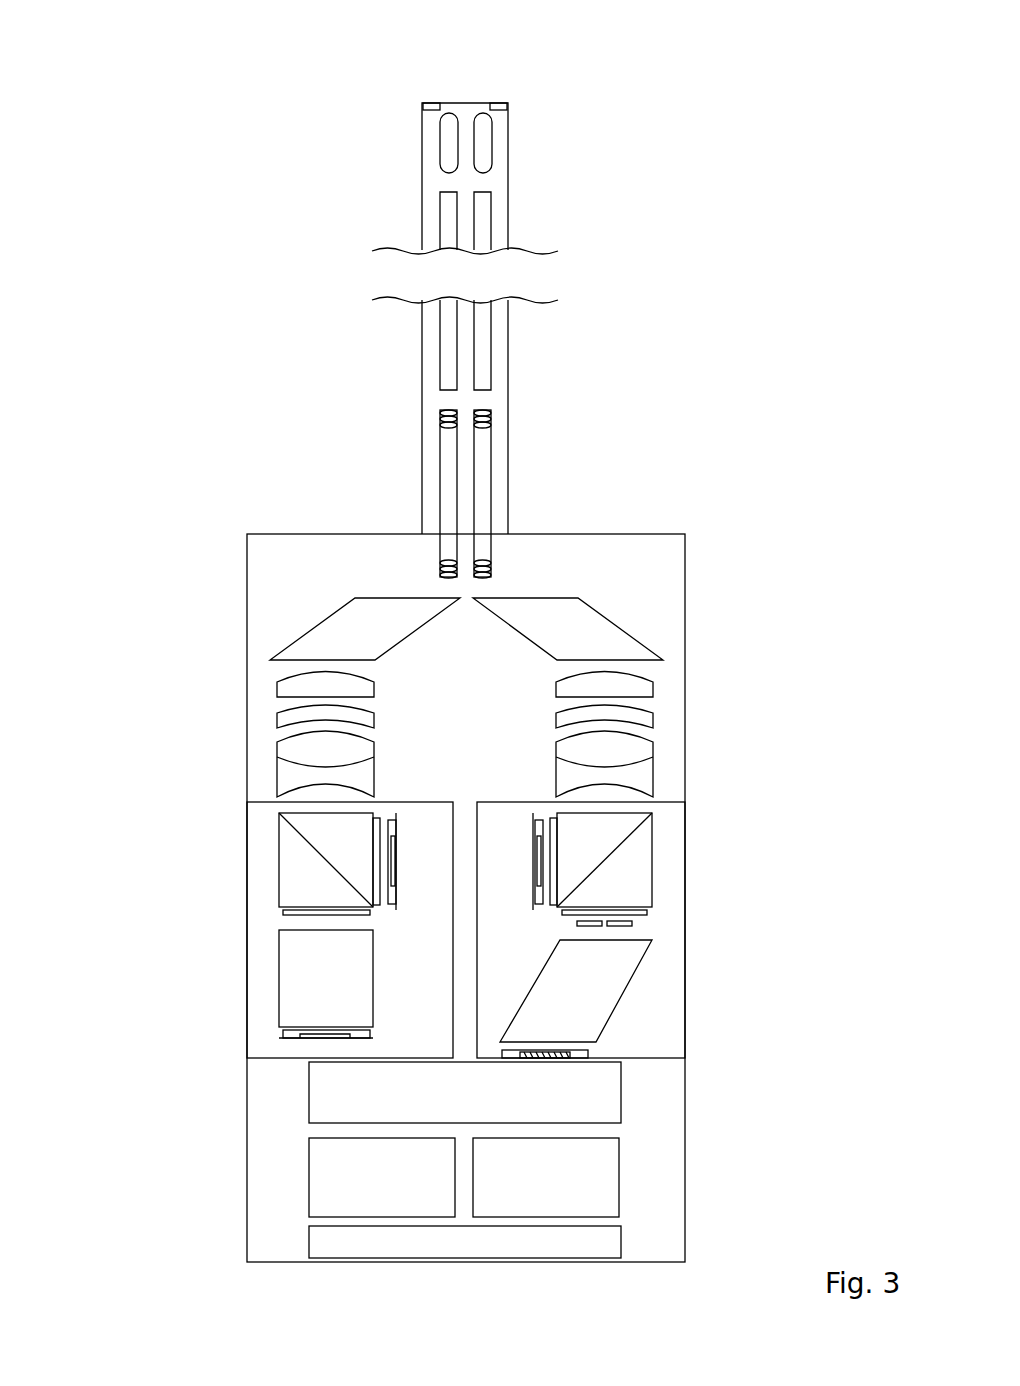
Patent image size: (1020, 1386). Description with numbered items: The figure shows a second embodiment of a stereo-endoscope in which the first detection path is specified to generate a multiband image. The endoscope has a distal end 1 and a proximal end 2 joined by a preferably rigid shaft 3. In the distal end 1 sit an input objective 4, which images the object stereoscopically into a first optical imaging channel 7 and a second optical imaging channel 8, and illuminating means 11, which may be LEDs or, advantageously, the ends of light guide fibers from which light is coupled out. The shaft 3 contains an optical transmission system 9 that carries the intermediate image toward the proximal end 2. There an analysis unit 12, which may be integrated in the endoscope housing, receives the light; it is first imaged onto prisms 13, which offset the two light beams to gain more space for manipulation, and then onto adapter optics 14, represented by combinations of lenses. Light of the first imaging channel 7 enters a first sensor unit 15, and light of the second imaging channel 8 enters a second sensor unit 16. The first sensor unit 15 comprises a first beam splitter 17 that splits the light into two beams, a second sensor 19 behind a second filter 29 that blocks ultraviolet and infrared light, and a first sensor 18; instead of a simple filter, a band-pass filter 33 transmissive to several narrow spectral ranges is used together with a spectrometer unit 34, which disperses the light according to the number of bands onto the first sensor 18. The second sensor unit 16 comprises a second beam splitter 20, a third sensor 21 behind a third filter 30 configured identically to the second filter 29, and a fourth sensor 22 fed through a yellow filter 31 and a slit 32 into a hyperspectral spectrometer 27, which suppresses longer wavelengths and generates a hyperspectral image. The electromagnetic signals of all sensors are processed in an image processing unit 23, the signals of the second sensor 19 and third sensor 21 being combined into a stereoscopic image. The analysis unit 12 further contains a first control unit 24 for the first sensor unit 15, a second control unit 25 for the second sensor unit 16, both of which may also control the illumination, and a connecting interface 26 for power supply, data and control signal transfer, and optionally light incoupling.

The distal end 1 is at (435, 103).
The proximal end 2 is at (494, 530).
The shaft 3 is at (518, 362).
The input objective 4 is at (447, 140).
The first optical imaging channel 7 is at (447, 398).
The second optical imaging channel 8 is at (482, 397).
The optical transmission system 9 is at (481, 211).
The illuminating means 11 is at (437, 103).
The analysis unit 12 is at (312, 532).
The prisms 13 is at (348, 632).
The adapter optics 14 is at (240, 675).
The first sensor unit 15 is at (288, 922).
The second sensor unit 16 is at (675, 978).
The first beam splitter 17 is at (300, 885).
The first sensor 18 is at (277, 1033).
The second sensor 19 is at (386, 827).
The second beam splitter 20 is at (642, 882).
The third sensor 21 is at (543, 827).
The fourth sensor 22 is at (588, 1052).
The image processing unit 23 is at (550, 1103).
The first control unit 24 is at (343, 1167).
The second control unit 25 is at (578, 1178).
The connecting interface 26 is at (398, 1241).
The hyperspectral spectrometer 27 is at (598, 1000).
The second filter 29 is at (376, 863).
The third filter 30 is at (557, 838).
The yellow filter 31 is at (647, 910).
The slit 32 is at (627, 922).
The band-pass filter 33 is at (287, 912).
The spectrometer unit 34 is at (310, 977).